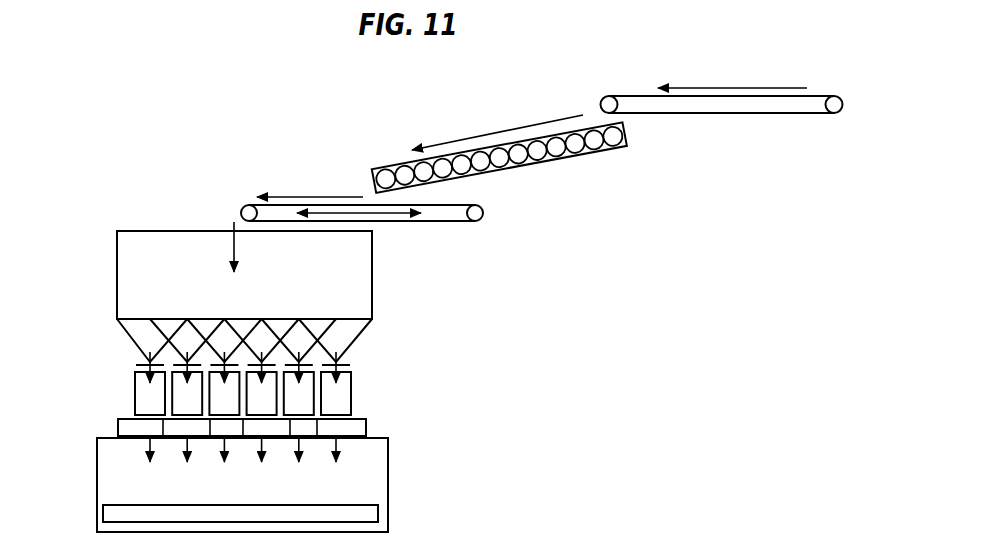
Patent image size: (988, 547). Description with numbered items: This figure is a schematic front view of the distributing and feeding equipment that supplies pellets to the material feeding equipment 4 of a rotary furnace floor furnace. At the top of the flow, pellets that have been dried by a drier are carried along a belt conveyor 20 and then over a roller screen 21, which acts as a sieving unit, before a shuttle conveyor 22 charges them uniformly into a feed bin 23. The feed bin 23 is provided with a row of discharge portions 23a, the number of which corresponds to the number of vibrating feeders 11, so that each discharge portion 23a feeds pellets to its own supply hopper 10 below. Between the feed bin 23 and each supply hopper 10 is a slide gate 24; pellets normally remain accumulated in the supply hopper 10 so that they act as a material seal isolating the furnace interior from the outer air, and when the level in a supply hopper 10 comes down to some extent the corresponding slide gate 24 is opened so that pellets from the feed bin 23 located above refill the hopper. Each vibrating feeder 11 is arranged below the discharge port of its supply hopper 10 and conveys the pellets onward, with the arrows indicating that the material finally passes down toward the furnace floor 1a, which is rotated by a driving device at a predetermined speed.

The furnace floor 1a is at (363, 505).
The material feeding equipment 4 is at (110, 389).
The supply hopper 10 is at (370, 386).
The vibrating feeder 11 is at (378, 418).
The belt conveyor 20 is at (797, 115).
The roller screen 21 is at (568, 160).
The shuttle conveyor 22 is at (450, 225).
The feed bin 23 is at (372, 292).
The discharge portion 23a is at (128, 342).
The slide gate 24 is at (137, 362).